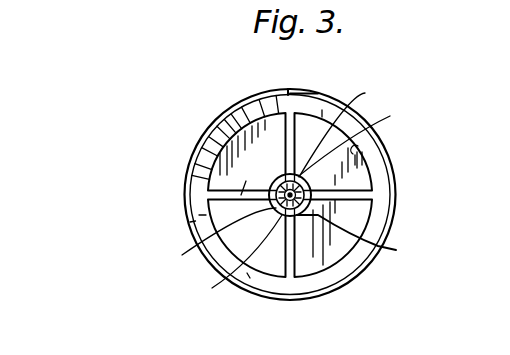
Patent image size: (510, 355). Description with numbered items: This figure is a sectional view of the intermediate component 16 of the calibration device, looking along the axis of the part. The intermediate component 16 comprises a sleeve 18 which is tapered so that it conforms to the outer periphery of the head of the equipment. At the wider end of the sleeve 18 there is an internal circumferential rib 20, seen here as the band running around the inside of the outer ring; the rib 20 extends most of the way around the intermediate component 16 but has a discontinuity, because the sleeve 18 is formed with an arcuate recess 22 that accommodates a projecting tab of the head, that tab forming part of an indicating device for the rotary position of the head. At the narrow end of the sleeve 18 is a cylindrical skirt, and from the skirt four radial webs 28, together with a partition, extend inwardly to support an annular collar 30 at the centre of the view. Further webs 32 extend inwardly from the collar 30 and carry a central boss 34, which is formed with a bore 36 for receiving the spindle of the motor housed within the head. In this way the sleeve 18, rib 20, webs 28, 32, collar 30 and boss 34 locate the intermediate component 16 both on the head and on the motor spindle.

The intermediate component 16 is at (405, 174).
The sleeve 18 is at (343, 272).
The internal circumferential rib 20 is at (357, 154).
The arcuate recess 22 is at (192, 163).
The radial webs 28 is at (283, 157).
The annular collar 30 is at (345, 122).
The further webs 32 is at (361, 133).
The central boss 34 is at (211, 242).
The bore 36 is at (229, 262).